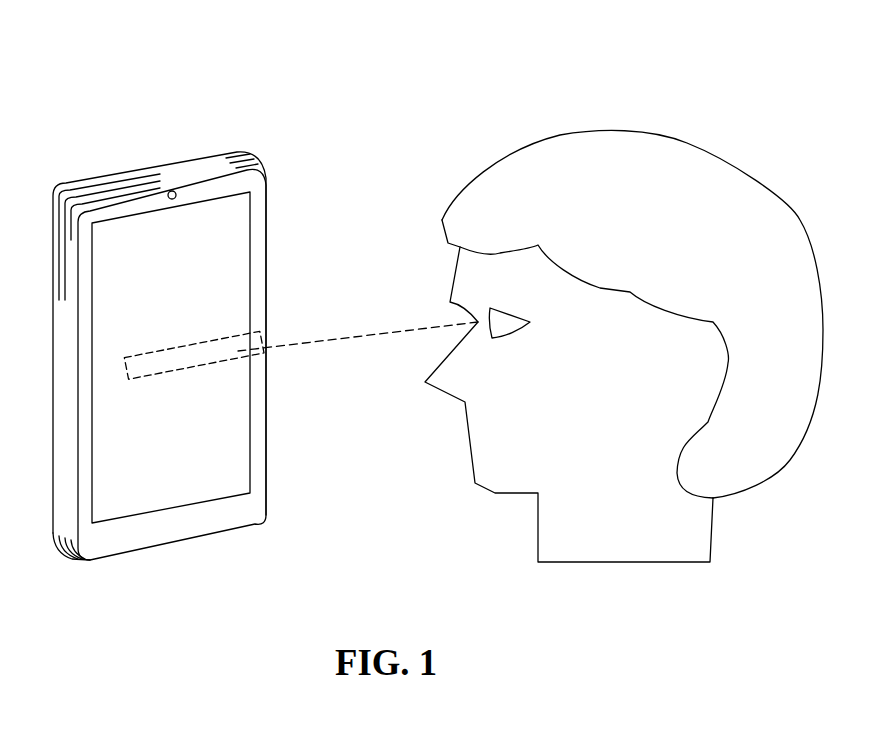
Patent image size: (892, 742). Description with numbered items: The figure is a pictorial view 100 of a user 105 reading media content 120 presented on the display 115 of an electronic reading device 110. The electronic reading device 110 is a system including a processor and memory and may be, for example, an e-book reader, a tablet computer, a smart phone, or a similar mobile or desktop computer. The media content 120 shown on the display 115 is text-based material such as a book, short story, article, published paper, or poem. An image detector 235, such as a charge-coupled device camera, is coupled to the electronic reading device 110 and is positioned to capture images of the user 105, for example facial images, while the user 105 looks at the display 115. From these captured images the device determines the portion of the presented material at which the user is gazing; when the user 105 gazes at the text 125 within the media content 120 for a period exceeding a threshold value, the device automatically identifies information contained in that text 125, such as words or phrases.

The pictorial view 100 is at (398, 94).
The user 105 is at (627, 562).
The electronic reading device 110 is at (165, 177).
The display 115 is at (242, 327).
The media content 120 is at (238, 220).
The text 125 is at (213, 362).
The image detector 235 is at (176, 193).